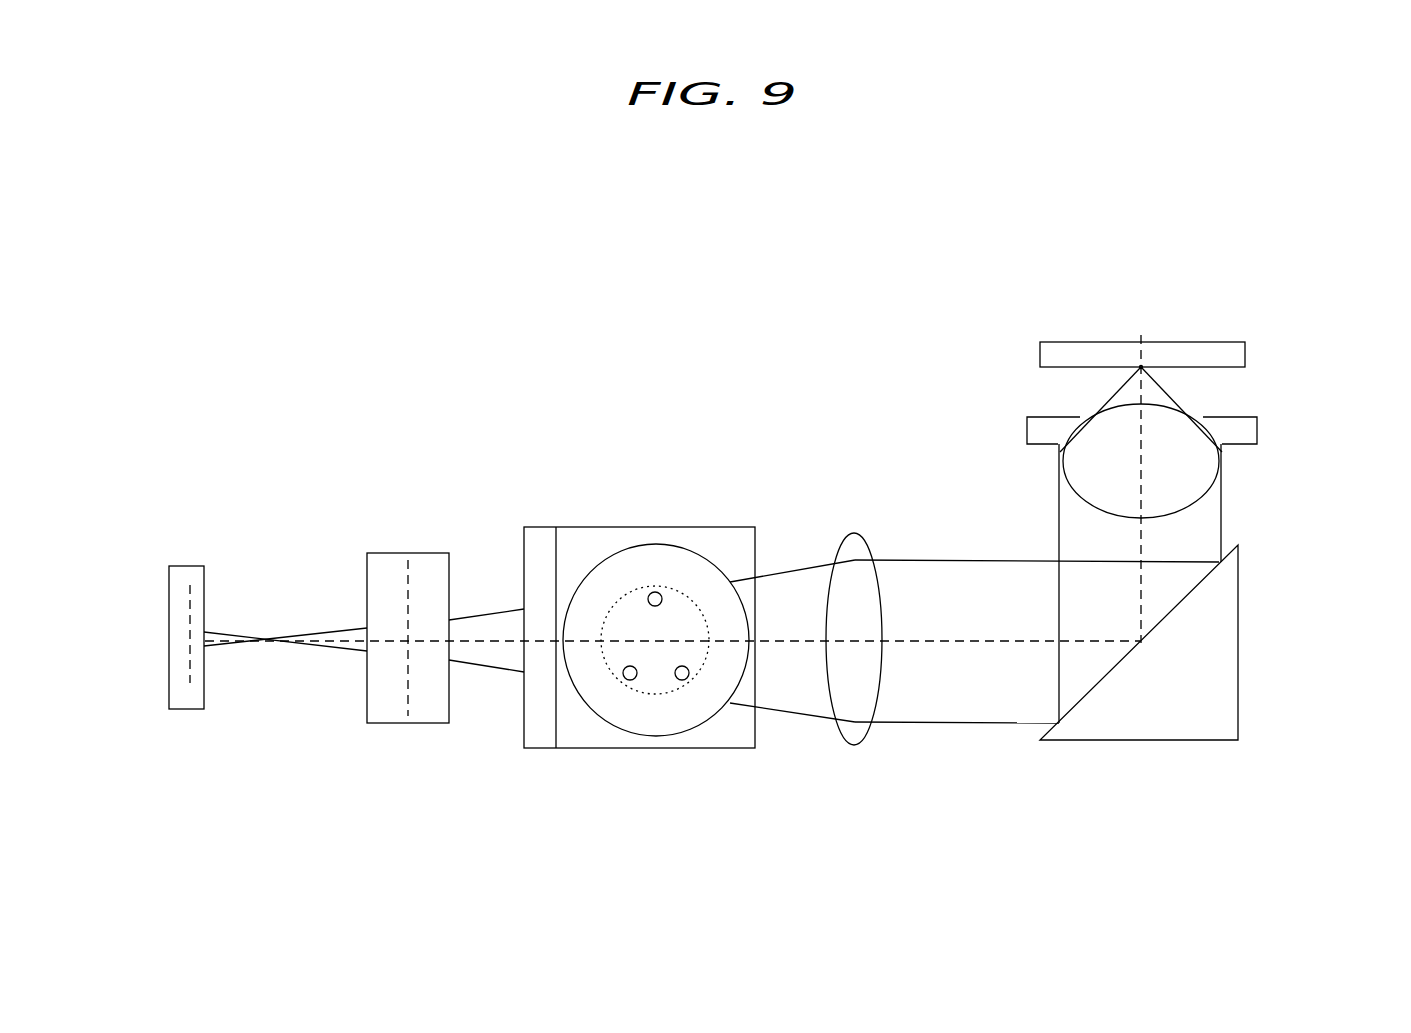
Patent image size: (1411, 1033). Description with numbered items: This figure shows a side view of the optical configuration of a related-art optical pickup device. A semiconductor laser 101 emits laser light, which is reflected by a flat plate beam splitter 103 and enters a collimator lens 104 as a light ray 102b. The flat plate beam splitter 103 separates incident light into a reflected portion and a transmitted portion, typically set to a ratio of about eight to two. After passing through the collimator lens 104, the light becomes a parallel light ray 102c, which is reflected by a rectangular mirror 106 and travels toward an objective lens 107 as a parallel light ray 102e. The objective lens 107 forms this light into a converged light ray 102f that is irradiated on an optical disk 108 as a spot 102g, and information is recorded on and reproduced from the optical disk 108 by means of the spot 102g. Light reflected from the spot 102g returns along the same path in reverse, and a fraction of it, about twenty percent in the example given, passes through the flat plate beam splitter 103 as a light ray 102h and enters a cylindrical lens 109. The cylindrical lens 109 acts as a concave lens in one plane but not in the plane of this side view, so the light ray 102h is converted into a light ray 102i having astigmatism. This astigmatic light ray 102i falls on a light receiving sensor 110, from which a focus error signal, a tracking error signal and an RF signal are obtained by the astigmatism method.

The semiconductor laser 101 is at (658, 562).
The light ray 102b is at (780, 692).
The parallel light ray 102c is at (953, 693).
The parallel light ray 102e is at (1070, 527).
The converged light ray 102f is at (1188, 400).
The spot 102g is at (1140, 365).
The light ray 102h is at (505, 623).
The light ray having astigmatism 102i is at (320, 638).
The flat plate beam splitter 103 is at (572, 738).
The collimator lens 104 is at (853, 550).
The rectangular mirror 106 is at (1225, 732).
The objective lens 107 is at (1252, 432).
The optical disk 108 is at (1188, 342).
The cylindrical lens 109 is at (388, 565).
The light receiving sensor 110 is at (185, 667).